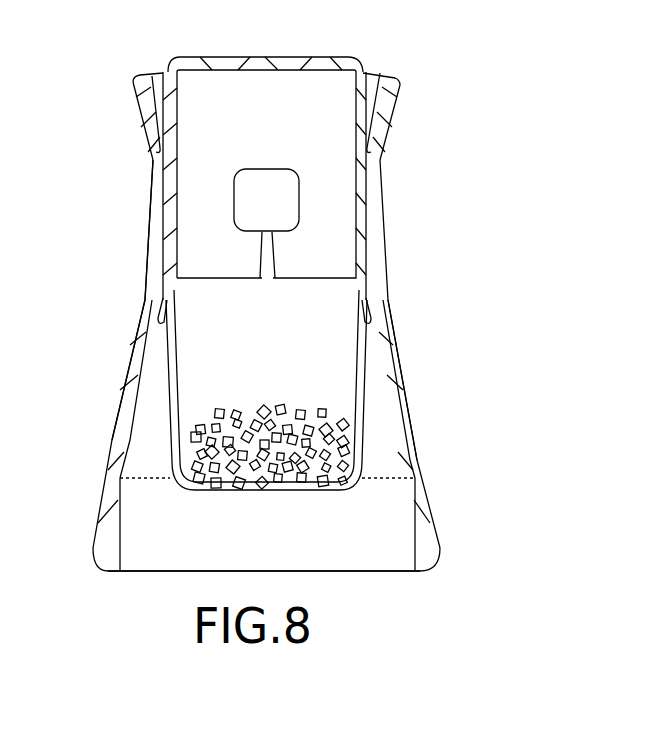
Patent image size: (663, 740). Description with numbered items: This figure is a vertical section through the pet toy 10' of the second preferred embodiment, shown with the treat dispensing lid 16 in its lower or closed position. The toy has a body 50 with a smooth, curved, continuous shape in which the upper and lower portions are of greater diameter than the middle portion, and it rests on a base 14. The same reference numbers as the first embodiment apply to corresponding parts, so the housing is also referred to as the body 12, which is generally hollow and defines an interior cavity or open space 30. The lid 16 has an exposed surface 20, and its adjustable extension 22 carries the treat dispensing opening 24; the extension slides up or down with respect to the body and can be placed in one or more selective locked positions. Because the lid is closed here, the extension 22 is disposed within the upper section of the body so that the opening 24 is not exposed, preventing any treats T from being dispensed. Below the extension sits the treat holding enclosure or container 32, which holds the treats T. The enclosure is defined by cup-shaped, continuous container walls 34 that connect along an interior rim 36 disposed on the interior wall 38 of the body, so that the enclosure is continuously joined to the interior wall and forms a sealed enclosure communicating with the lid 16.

The pet toy 10' is at (366, 194).
The body 12 is at (477, 448).
The base 14 is at (393, 571).
The adjustable lid 16 is at (421, 43).
The exposed surface 20 is at (393, 103).
The adjustable extension 22 is at (282, 129).
The treat dispensing opening 24 is at (257, 200).
The interior cavity 30 is at (358, 541).
The treat holding enclosure 32 is at (137, 433).
The container walls 34 is at (222, 490).
The interior rim 36 is at (155, 322).
The interior wall 38 is at (120, 556).
The body 50 is at (398, 375).
The treats T is at (262, 413).